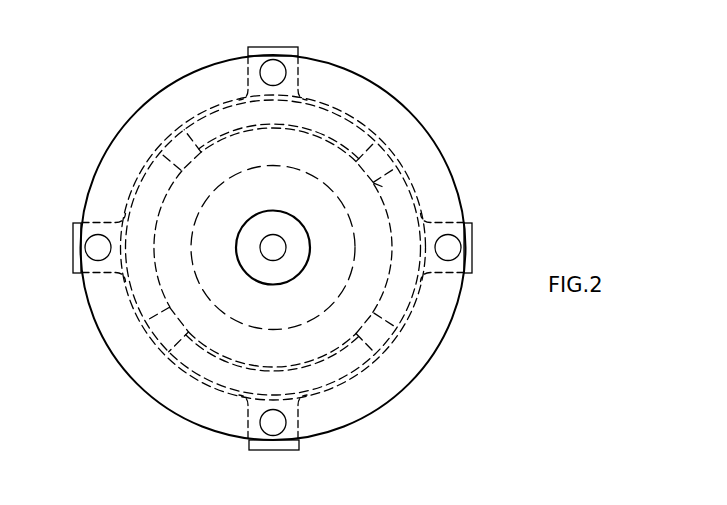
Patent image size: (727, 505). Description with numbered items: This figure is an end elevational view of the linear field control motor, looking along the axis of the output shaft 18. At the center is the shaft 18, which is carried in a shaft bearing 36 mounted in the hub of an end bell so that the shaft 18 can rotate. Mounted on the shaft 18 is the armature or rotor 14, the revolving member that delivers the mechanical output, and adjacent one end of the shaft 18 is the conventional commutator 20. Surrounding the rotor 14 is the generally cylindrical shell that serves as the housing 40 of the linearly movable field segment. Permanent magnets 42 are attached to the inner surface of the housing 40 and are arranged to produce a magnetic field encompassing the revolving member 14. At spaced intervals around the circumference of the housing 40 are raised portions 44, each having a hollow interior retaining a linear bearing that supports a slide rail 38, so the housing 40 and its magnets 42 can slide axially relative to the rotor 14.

The armature or rotor 14 is at (386, 205).
The shaft 18 is at (260, 249).
The commutator 20 is at (348, 212).
The shaft bearing 36 is at (247, 274).
The slide rail 38 is at (270, 65).
The housing 40 is at (193, 116).
The permanent magnets 42 is at (155, 157).
The raised portions 44 is at (287, 46).